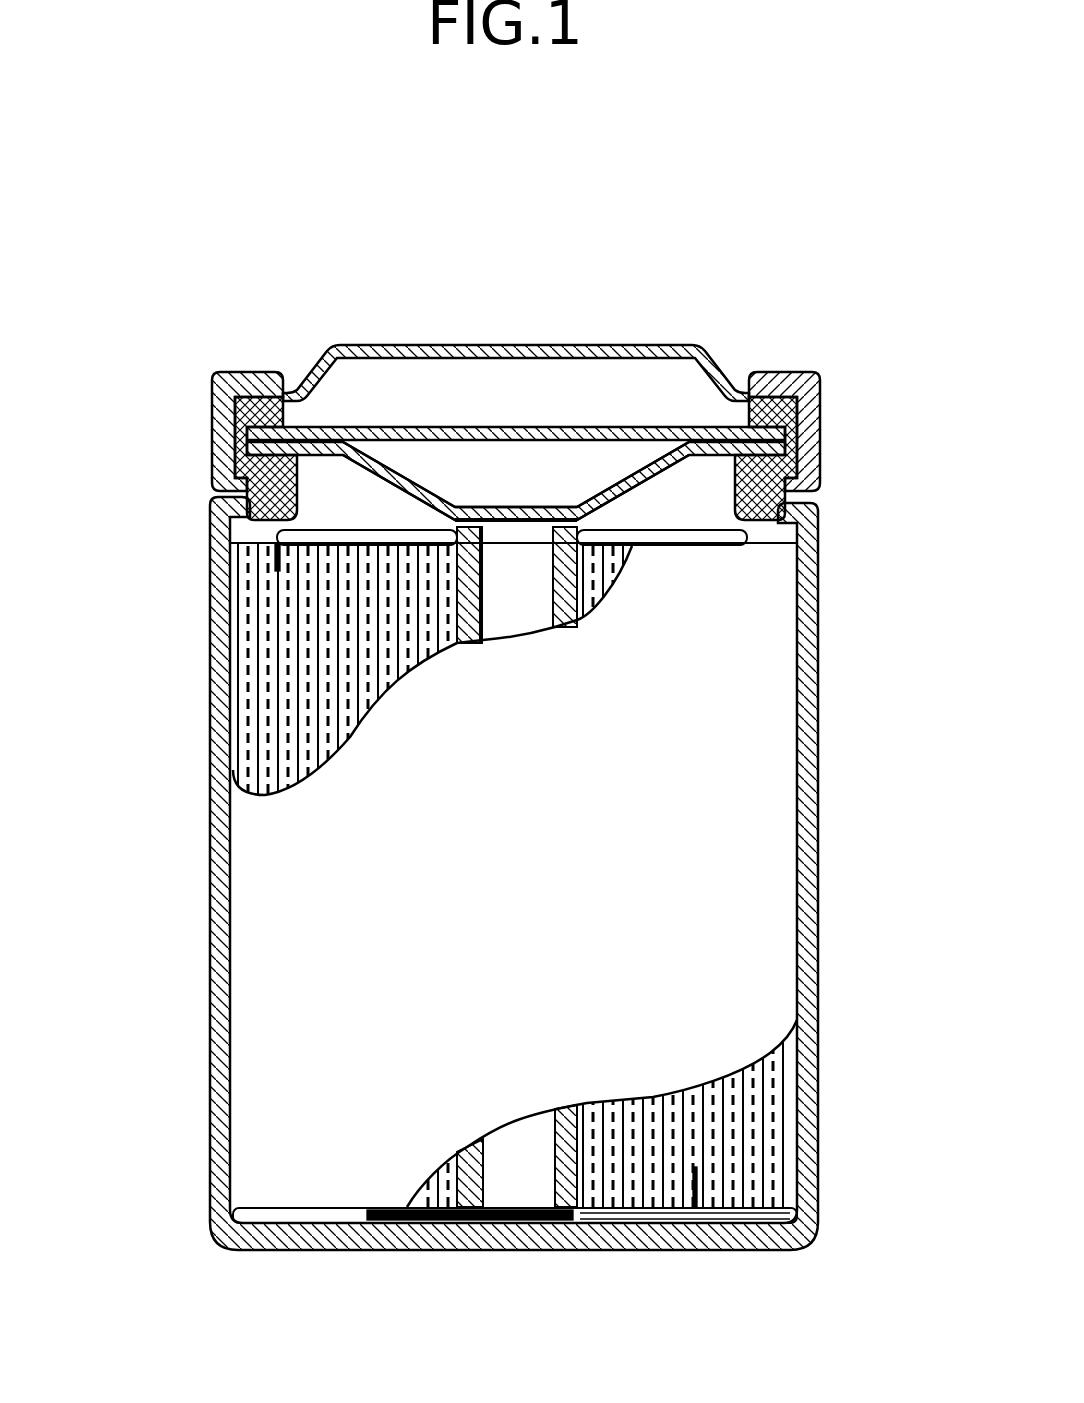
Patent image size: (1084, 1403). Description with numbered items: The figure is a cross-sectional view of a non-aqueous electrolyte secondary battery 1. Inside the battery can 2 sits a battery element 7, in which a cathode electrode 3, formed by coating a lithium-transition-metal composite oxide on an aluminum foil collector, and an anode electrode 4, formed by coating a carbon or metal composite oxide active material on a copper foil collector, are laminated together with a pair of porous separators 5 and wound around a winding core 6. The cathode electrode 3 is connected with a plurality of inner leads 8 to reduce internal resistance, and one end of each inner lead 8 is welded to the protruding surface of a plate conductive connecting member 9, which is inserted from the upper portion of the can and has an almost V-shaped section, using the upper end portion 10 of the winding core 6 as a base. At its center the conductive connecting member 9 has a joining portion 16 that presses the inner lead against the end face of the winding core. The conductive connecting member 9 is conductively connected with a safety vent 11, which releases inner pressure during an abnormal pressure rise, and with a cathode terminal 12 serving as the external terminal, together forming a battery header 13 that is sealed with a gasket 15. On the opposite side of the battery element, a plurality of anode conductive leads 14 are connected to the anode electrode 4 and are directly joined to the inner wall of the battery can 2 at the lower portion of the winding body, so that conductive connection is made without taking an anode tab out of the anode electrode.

The non-aqueous electrolyte secondary battery 1 is at (748, 147).
The battery can 2 is at (815, 576).
The cathode electrode 3 is at (267, 598).
The anode electrode 4 is at (247, 655).
The porous separators 5 is at (253, 560).
The winding core 6 is at (453, 627).
The battery element 7 is at (760, 890).
The inner leads 8 is at (362, 530).
The conductive connecting member 9 is at (600, 495).
The upper end portion 10 is at (590, 585).
The safety vent 11 is at (384, 425).
The cathode terminal 12 is at (478, 347).
The battery header 13 is at (359, 310).
The anode conductive leads 14 is at (523, 1225).
The gasket 15 is at (823, 397).
The joining portion 16 is at (520, 503).